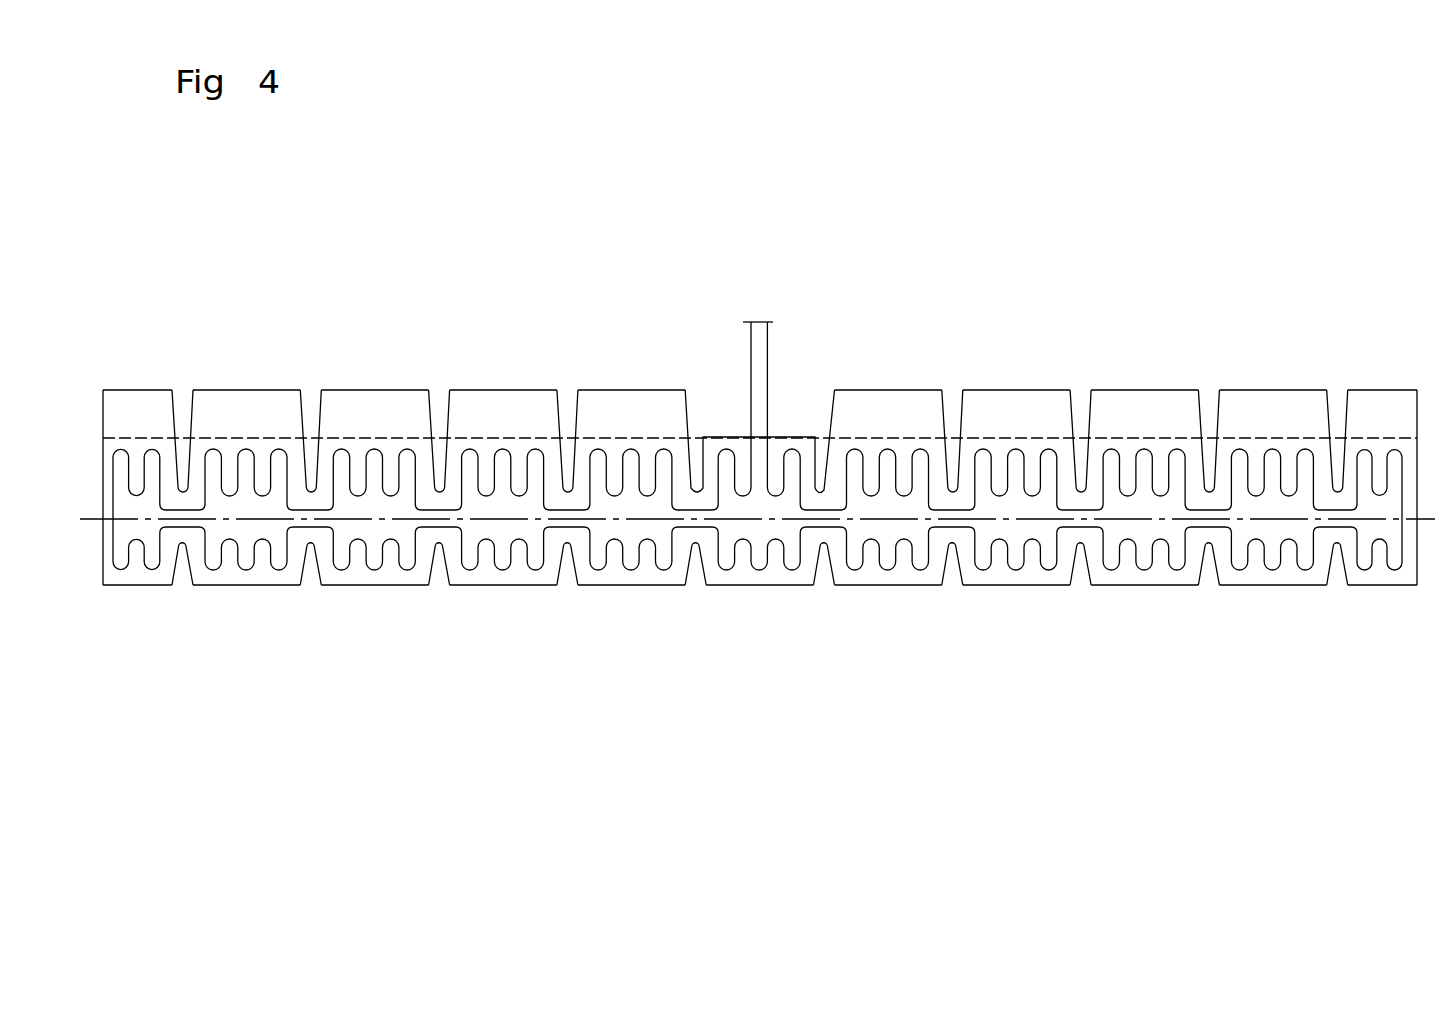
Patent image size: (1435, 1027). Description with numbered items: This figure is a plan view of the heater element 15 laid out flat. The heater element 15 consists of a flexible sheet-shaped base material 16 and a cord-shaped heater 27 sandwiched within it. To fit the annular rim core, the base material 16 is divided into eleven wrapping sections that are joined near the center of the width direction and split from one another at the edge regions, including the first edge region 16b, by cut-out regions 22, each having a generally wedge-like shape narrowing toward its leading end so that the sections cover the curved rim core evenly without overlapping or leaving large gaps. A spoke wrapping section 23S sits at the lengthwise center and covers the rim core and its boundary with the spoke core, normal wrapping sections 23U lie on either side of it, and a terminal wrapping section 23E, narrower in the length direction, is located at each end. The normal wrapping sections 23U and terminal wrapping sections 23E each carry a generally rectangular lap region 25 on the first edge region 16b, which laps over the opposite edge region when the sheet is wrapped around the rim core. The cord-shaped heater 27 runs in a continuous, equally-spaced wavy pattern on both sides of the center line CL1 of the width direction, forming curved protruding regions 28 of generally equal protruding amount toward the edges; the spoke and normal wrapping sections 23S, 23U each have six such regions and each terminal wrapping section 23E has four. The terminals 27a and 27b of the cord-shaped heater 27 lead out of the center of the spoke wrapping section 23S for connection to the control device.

The heater element 15 is at (1346, 292).
The base material 16 is at (1260, 588).
The first edge region 16b is at (1378, 447).
The cut-out region 22 is at (1204, 454).
The normal wrapping section 23U is at (981, 371).
The spoke wrapping section 23S is at (764, 601).
The terminal wrapping section 23E is at (135, 600).
The lap region 25 is at (607, 390).
The cord-shaped heater 27 is at (776, 399).
The terminal 27a is at (748, 360).
The terminal 27b is at (767, 347).
The curved protruding region 28 is at (382, 427).
The center line CL1 is at (1140, 522).